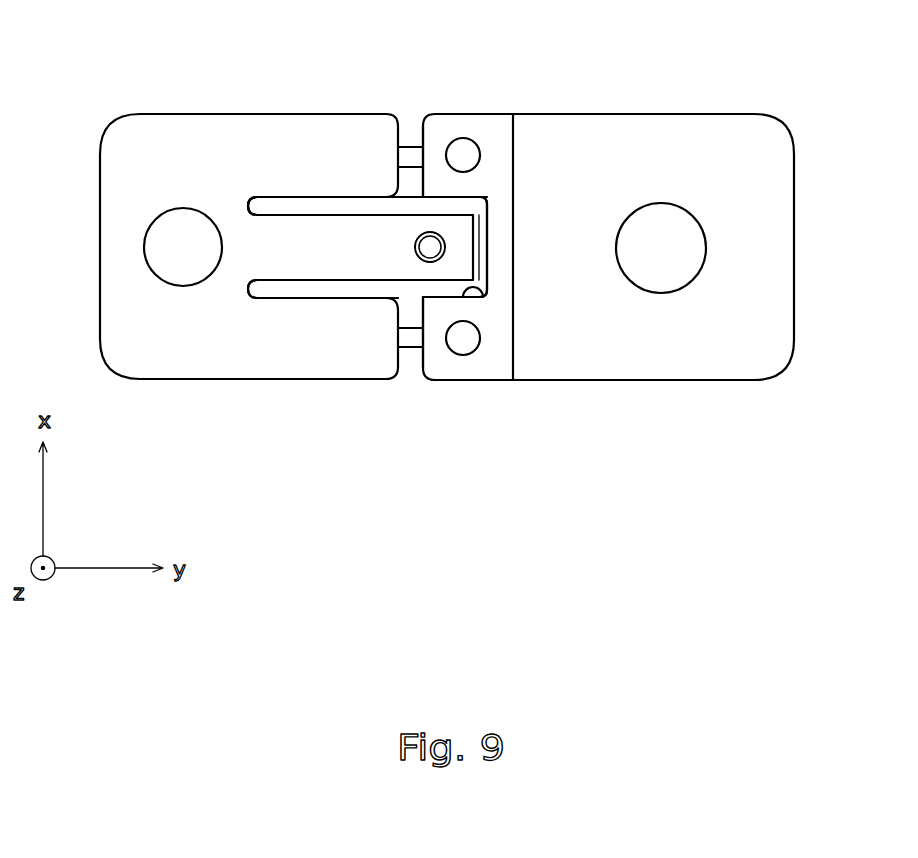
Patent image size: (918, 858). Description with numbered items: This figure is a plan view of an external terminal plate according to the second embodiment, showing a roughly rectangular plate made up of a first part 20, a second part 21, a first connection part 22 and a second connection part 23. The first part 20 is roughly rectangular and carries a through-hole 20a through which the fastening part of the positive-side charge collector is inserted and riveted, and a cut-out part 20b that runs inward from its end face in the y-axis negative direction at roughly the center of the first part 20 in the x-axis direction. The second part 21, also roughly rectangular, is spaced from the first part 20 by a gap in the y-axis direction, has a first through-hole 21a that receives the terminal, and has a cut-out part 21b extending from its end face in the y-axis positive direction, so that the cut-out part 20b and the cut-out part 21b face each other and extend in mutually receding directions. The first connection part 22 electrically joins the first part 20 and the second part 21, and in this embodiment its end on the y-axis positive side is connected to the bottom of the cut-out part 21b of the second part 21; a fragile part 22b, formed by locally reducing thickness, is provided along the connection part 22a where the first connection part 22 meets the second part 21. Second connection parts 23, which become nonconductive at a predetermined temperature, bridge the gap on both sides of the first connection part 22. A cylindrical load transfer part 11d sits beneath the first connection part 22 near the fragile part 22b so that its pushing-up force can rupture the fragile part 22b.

The first part 20 is at (227, 115).
The through-hole 20a is at (181, 208).
The cut-out part 20b is at (357, 205).
The second part 21 is at (583, 115).
The first through-hole 21a is at (668, 203).
The cut-out part 21b is at (490, 297).
The first connection part 22 is at (313, 283).
The connection part 22a is at (490, 245).
The fragile part 22b is at (360, 289).
The second connection part 23 is at (406, 337).
The load transfer part 11d is at (425, 250).